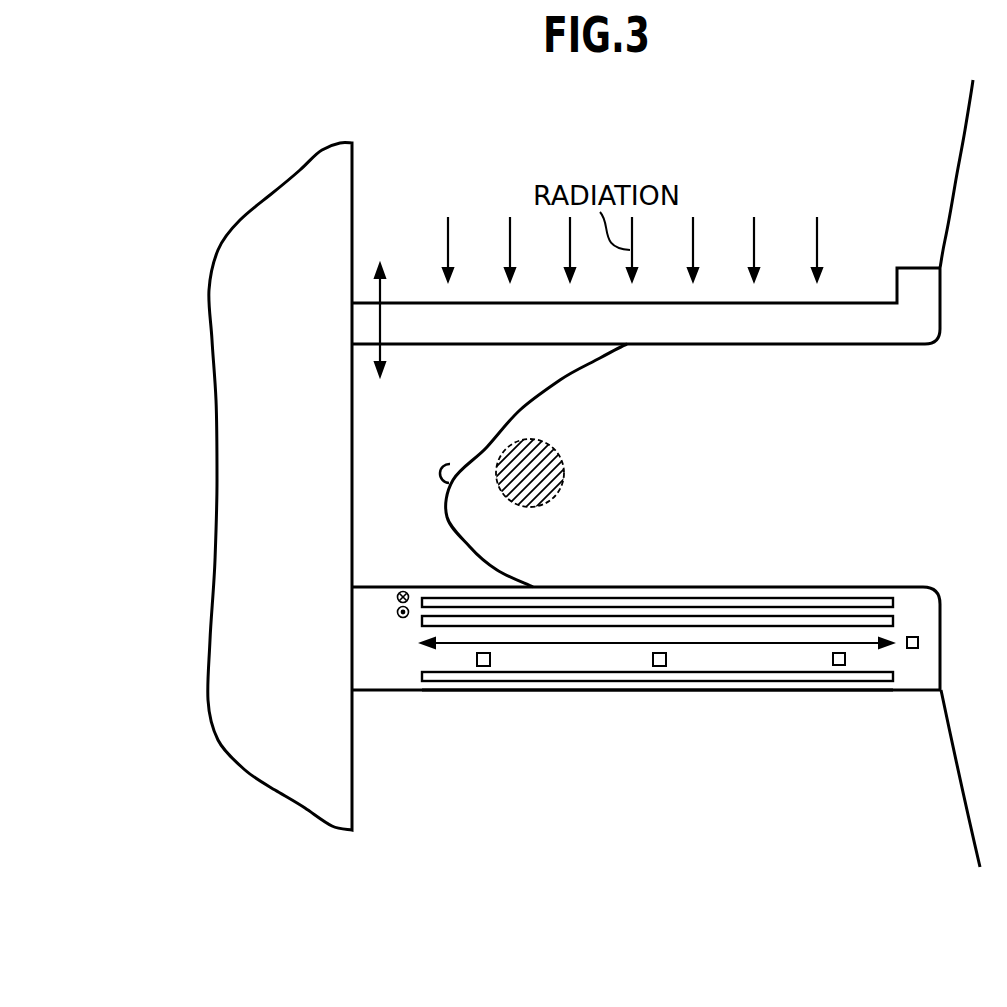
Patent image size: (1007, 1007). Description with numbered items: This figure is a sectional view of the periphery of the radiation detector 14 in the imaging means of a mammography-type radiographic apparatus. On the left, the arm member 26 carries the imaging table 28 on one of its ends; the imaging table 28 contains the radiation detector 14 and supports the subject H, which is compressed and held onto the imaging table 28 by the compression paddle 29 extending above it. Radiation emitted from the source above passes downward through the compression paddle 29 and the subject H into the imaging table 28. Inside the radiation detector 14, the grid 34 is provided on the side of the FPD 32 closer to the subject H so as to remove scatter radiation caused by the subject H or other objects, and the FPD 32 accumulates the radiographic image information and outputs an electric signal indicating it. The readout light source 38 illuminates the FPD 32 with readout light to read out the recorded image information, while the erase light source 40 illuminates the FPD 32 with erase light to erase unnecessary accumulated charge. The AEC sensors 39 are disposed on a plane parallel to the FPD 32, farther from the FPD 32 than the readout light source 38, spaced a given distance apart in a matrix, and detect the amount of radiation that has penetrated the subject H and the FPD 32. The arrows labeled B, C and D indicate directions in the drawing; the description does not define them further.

The radiation detector 14 is at (722, 712).
The arm member 26 is at (229, 470).
The imaging table 28 is at (388, 693).
The compression paddle 29 is at (908, 287).
The FPD 32 is at (598, 618).
The grid 34 is at (648, 605).
The readout light source 38 is at (912, 637).
The AEC sensors 39 is at (483, 667).
The erase light source 40 is at (577, 673).
The subject H is at (480, 430).
The direction B is at (393, 314).
The direction C is at (648, 647).
The direction D is at (389, 604).